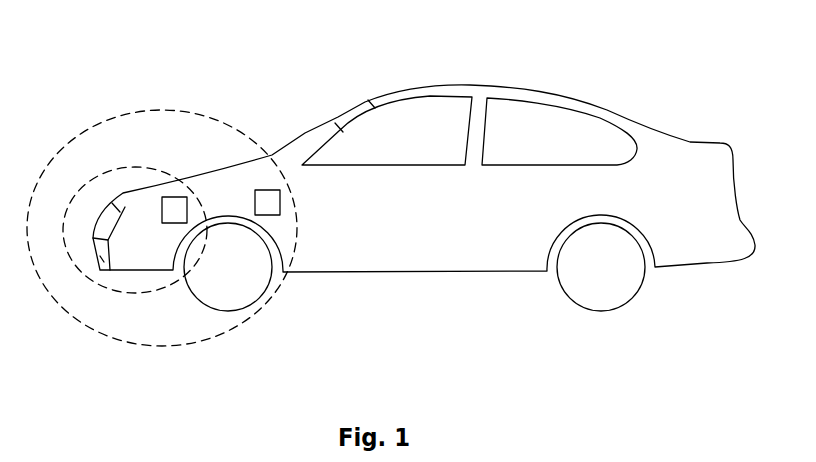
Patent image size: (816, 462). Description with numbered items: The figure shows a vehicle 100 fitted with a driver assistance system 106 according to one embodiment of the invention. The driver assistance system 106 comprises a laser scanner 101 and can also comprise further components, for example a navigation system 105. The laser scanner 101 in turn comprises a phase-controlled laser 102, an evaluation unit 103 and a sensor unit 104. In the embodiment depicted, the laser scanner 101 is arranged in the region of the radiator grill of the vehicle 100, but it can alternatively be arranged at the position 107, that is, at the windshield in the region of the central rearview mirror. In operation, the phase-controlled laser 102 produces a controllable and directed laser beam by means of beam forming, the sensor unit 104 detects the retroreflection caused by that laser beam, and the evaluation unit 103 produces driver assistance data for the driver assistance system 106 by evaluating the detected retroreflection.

The vehicle 100 is at (679, 106).
The laser scanner 101 is at (142, 294).
The phase-controlled laser 102 is at (123, 193).
The evaluation unit 103 is at (170, 207).
The sensor unit 104 is at (103, 270).
The navigation system 105 is at (268, 203).
The driver assistance system 106 is at (233, 330).
The position 107 is at (347, 112).